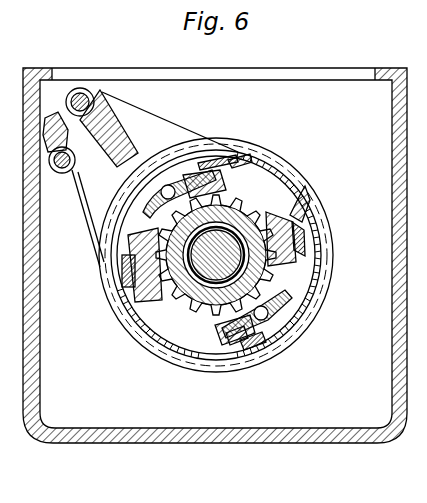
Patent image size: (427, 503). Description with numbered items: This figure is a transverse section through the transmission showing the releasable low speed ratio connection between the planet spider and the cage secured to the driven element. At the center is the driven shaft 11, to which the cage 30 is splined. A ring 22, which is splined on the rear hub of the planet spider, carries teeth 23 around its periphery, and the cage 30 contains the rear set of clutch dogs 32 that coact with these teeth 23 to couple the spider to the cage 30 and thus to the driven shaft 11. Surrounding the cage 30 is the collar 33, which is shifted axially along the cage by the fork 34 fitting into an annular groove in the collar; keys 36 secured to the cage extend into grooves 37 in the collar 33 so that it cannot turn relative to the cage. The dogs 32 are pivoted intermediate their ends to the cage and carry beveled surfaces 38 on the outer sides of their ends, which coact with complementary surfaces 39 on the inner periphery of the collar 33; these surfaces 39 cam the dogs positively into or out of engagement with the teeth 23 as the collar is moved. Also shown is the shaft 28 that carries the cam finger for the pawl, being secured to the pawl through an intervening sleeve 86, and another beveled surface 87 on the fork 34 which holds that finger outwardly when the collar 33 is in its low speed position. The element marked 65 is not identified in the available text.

The driven shaft 11 is at (276, 290).
The ring 22 is at (247, 194).
The teeth 23 is at (294, 188).
The shaft 28 is at (76, 160).
The cage 30 is at (293, 213).
The rear set of clutch dogs 32 is at (222, 160).
The collar 33 is at (305, 192).
The fork 34 is at (180, 118).
The keys 36 is at (303, 233).
The grooves 37 is at (314, 242).
The beveled surfaces 38 is at (202, 160).
The complementary surfaces 39 is at (238, 160).
The arm 65 is at (120, 115).
The sleeve 86 is at (58, 178).
The beveled surface 87 is at (62, 128).